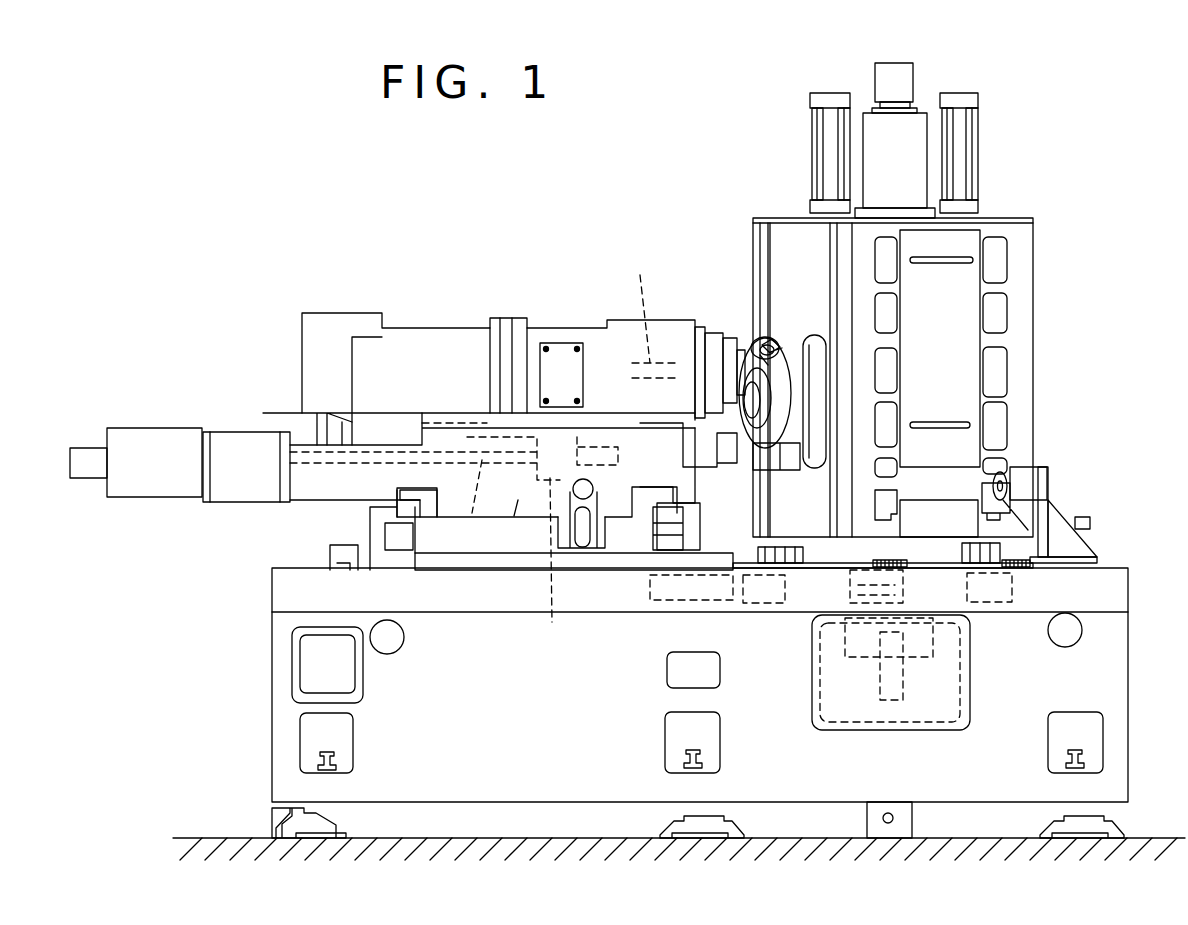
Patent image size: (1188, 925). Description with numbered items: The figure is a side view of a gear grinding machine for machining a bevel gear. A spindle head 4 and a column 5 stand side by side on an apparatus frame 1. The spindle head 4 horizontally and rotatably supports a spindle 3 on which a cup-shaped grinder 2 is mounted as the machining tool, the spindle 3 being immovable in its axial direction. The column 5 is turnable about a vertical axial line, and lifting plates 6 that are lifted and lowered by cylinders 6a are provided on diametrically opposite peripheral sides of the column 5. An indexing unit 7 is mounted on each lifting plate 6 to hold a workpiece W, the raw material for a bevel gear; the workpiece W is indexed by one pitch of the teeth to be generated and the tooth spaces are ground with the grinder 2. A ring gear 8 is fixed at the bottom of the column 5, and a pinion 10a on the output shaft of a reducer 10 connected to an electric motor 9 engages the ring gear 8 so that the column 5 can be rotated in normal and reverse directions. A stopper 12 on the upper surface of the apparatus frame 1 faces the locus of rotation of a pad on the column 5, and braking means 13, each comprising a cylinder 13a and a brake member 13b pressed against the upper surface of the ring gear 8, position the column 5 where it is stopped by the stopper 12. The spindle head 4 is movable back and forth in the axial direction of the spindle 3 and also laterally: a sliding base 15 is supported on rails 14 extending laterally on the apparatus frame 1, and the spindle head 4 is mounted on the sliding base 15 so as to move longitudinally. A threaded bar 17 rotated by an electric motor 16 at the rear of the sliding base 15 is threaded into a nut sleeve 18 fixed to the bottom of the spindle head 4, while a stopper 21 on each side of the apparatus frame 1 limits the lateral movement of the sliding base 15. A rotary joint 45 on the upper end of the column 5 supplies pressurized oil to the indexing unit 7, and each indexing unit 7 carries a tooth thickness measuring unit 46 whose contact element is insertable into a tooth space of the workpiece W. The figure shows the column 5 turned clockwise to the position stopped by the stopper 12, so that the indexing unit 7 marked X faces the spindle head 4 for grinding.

The apparatus frame 1 is at (292, 580).
The cup-shaped grinder 2 is at (745, 340).
The spindle 3 is at (513, 409).
The spindle head 4 is at (622, 330).
The column 5 is at (1020, 305).
The lifting plate 6 is at (823, 337).
The cylinder 6a is at (818, 155).
The indexing unit 7 is at (811, 408).
The ring gear 8 is at (1080, 548).
The electric motor 9 is at (890, 700).
The reducer 10 is at (930, 657).
The pinion 10a is at (902, 548).
The stopper 12 is at (1022, 478).
The braking means 13 is at (745, 546).
The cylinder 13a is at (763, 605).
The brake member 13b is at (800, 565).
The rails 14 is at (408, 500).
The sliding base 15 is at (512, 526).
The electric motor 16 is at (165, 440).
The threaded bar 17 is at (486, 506).
The nut sleeve 18 is at (543, 567).
The stopper 21 is at (593, 490).
The rotary joint 45 is at (895, 75).
The tooth thickness measuring unit 46 is at (773, 340).
The workpiece W is at (757, 347).